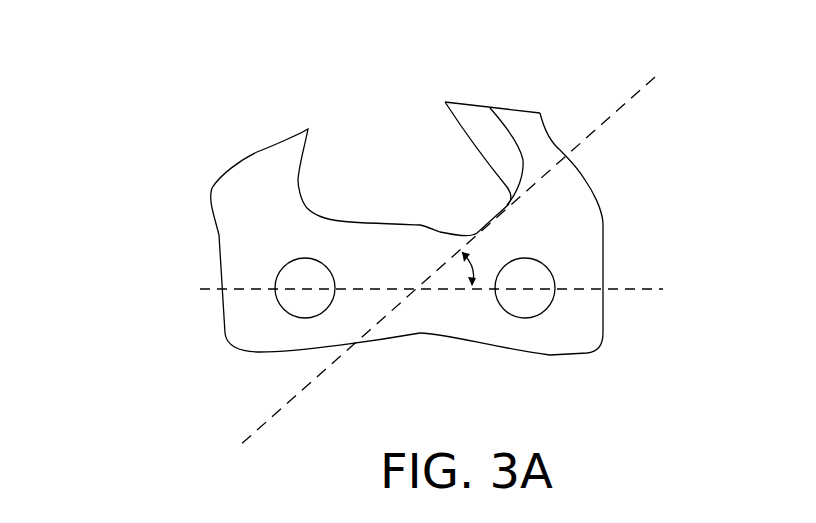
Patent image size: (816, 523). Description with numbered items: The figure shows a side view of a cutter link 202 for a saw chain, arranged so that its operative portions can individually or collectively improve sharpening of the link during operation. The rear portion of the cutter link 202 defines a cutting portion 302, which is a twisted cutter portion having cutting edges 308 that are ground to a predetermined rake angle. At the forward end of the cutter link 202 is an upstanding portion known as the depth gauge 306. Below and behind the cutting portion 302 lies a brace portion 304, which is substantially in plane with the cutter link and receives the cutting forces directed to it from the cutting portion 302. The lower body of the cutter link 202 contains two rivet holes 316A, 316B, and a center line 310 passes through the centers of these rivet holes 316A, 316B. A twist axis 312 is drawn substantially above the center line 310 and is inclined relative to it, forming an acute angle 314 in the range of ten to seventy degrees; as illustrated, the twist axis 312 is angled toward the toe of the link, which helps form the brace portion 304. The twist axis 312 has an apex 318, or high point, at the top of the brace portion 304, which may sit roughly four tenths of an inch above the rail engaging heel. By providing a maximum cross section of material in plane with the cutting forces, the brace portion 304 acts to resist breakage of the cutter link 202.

The cutter link 202 is at (190, 234).
The cutting portion 302 is at (520, 122).
The brace portion 304 is at (577, 197).
The depth gauge 306 is at (262, 140).
The cutting edges 308 is at (445, 100).
The center line 310 is at (635, 287).
The twist axis 312 is at (617, 110).
The acute angle 314 is at (468, 272).
The rivet hole 316A is at (303, 298).
The rivet hole 316B is at (530, 303).
The apex 318 is at (565, 156).